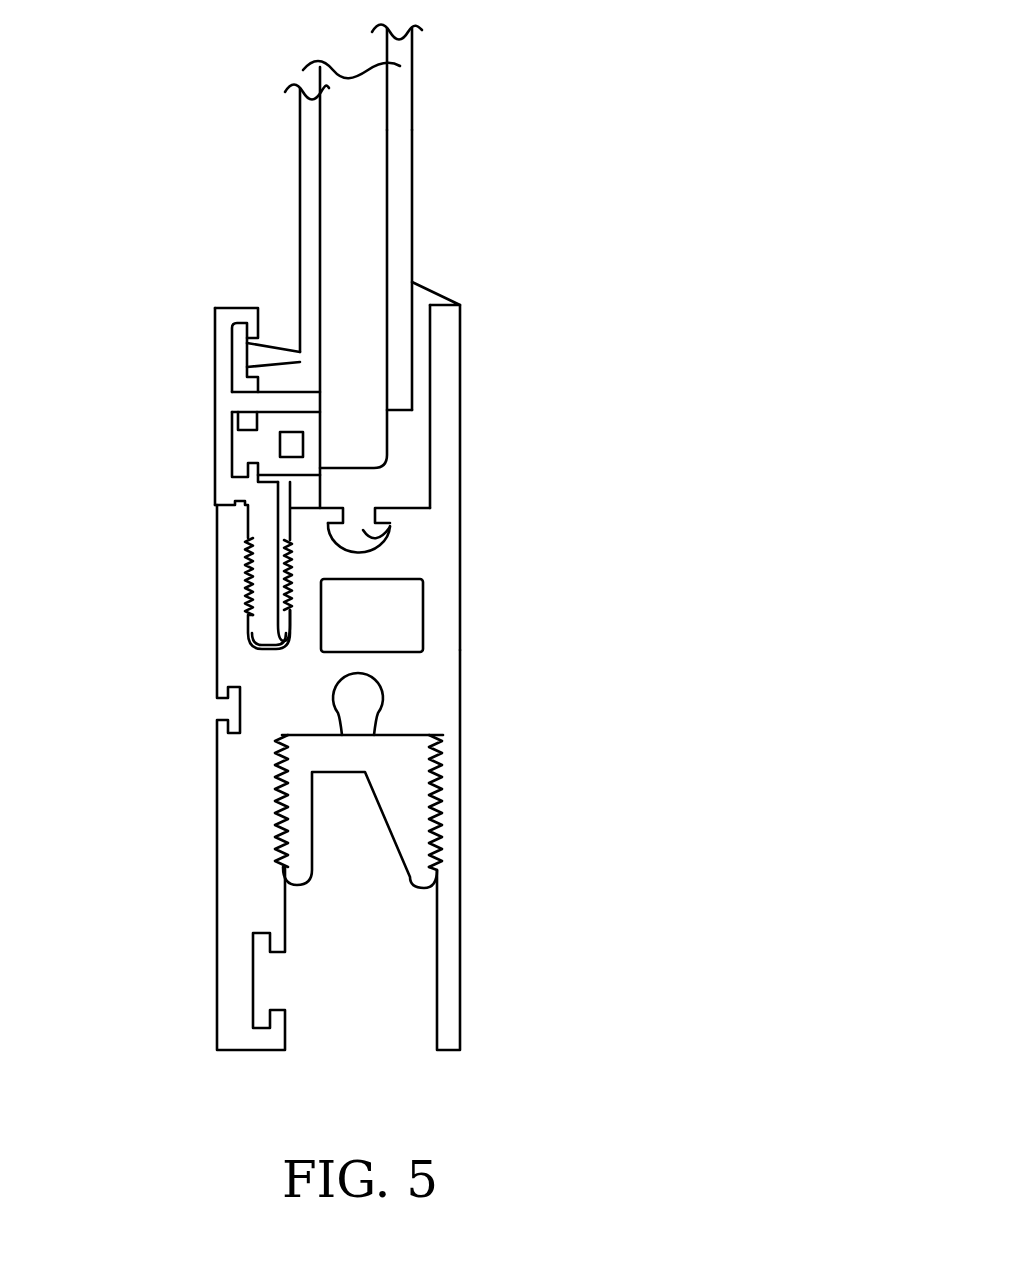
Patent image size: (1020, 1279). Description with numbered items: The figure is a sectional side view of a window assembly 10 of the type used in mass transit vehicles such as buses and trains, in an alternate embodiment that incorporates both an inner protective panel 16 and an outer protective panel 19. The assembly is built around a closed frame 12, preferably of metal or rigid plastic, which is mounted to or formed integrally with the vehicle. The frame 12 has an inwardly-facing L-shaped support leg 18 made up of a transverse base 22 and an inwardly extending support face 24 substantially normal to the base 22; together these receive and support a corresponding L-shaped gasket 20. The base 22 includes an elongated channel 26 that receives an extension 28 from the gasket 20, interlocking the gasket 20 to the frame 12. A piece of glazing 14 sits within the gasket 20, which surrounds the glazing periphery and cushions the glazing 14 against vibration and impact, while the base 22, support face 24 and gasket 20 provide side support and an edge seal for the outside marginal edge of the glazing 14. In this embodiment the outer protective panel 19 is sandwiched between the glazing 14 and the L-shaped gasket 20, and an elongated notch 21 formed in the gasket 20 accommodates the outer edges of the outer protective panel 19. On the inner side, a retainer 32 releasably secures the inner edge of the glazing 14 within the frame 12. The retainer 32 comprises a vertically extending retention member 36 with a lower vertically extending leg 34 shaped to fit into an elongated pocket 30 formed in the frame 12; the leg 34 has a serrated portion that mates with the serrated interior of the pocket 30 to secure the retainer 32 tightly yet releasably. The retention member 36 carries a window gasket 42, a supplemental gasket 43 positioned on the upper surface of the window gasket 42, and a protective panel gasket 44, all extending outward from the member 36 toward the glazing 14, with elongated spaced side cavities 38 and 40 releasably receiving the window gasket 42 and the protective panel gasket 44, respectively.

The window assembly 10 is at (695, 405).
The frame 12 is at (478, 640).
The glazing 14 is at (405, 202).
The inner protective panel 16 is at (285, 185).
The L-shaped support leg 18 is at (475, 453).
The outer protective panel 19 is at (430, 78).
The L-shaped gasket 20 is at (445, 367).
The elongated notch 21 is at (433, 408).
The transverse base 22 is at (420, 508).
The support face 24 is at (455, 328).
The elongated channel 26 is at (390, 527).
The extension 28 is at (363, 535).
The elongated pocket 30 is at (265, 590).
The retainer 32 is at (200, 422).
The lower vertically extending leg 34 is at (275, 573).
The retention member 36 is at (222, 354).
The side cavity 38 is at (243, 466).
The side cavity 40 is at (222, 310).
The window gasket 42 is at (313, 449).
The supplemental gasket 43 is at (278, 400).
The protective panel gasket 44 is at (286, 343).